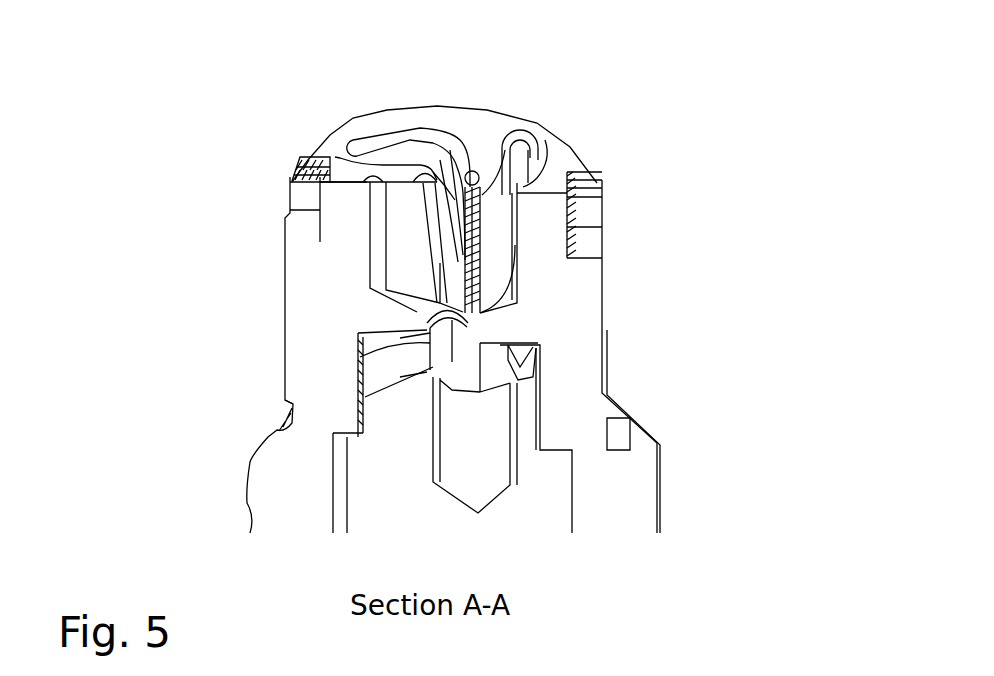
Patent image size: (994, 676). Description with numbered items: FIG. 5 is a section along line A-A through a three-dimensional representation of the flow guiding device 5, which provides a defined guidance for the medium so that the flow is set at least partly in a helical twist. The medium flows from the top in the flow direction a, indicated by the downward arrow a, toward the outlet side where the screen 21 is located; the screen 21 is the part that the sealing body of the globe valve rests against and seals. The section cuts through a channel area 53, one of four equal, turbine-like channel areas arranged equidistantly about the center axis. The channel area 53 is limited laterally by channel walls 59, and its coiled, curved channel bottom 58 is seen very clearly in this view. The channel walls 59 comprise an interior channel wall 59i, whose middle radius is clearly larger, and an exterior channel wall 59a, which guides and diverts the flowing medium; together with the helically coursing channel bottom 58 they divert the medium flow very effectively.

The flow guiding device 5 is at (662, 333).
The screen 21 is at (365, 358).
The channel area 53 is at (365, 152).
The channel bottom 58 is at (465, 170).
The channel walls 59 is at (408, 150).
The exterior channel wall 59a is at (520, 157).
The interior channel wall 59i is at (505, 190).
The flow direction a is at (450, 92).